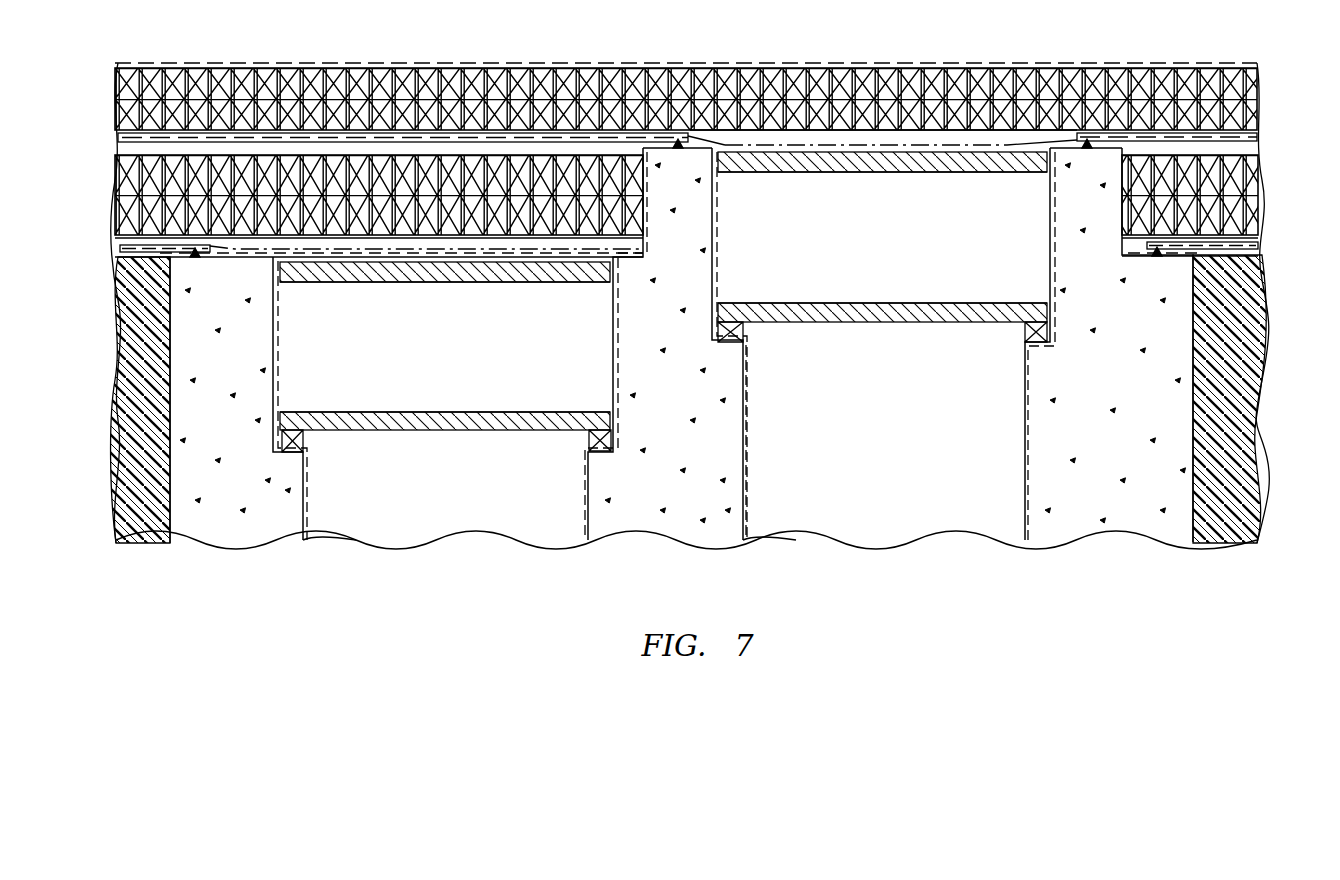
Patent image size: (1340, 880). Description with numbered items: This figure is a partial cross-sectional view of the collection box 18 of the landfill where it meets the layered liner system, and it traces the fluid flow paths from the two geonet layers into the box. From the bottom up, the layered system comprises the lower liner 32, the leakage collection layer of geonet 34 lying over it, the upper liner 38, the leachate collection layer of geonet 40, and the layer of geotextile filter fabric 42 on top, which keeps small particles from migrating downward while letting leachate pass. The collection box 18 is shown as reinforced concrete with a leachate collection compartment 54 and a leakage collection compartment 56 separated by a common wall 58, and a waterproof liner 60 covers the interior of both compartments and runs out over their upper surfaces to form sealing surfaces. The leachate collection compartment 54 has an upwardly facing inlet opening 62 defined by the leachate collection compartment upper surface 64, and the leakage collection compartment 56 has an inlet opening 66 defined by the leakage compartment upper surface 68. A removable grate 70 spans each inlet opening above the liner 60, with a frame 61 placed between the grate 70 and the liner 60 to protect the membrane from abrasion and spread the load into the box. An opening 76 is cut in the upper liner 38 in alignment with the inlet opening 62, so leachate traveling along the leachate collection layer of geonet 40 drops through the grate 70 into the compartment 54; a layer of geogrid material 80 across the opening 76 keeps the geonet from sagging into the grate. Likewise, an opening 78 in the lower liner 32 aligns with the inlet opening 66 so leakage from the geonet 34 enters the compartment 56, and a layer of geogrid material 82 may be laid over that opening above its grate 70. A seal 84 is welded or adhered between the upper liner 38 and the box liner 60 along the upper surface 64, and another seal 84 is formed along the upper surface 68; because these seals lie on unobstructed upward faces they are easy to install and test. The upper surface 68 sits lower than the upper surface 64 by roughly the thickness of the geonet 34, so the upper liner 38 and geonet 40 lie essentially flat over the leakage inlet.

The collection box 18 is at (1122, 508).
The lower liner 32 is at (118, 250).
The leakage collection layer of geonet 34 is at (118, 207).
The upper liner 38 is at (118, 140).
The leachate collection layer of geonet 40 is at (118, 112).
The layer of geotextile filter fabric 42 is at (1207, 61).
The leachate collection compartment 54 is at (868, 467).
The leakage collection compartment 56 is at (428, 507).
The common wall 58 is at (675, 514).
The liner 60 is at (748, 440).
The frame 61 is at (305, 441).
The inlet opening 62 is at (928, 170).
The leachate collection compartment upper surface 64 is at (667, 151).
The inlet opening 66 is at (540, 281).
The leakage compartment upper surface 68 is at (178, 259).
The removable grate 70 is at (428, 390).
The opening 76 is at (942, 137).
The opening 78 is at (380, 247).
The layer of geogrid material 80 is at (790, 145).
The layer of geogrid material 82 is at (458, 253).
The seal 84 is at (193, 259).